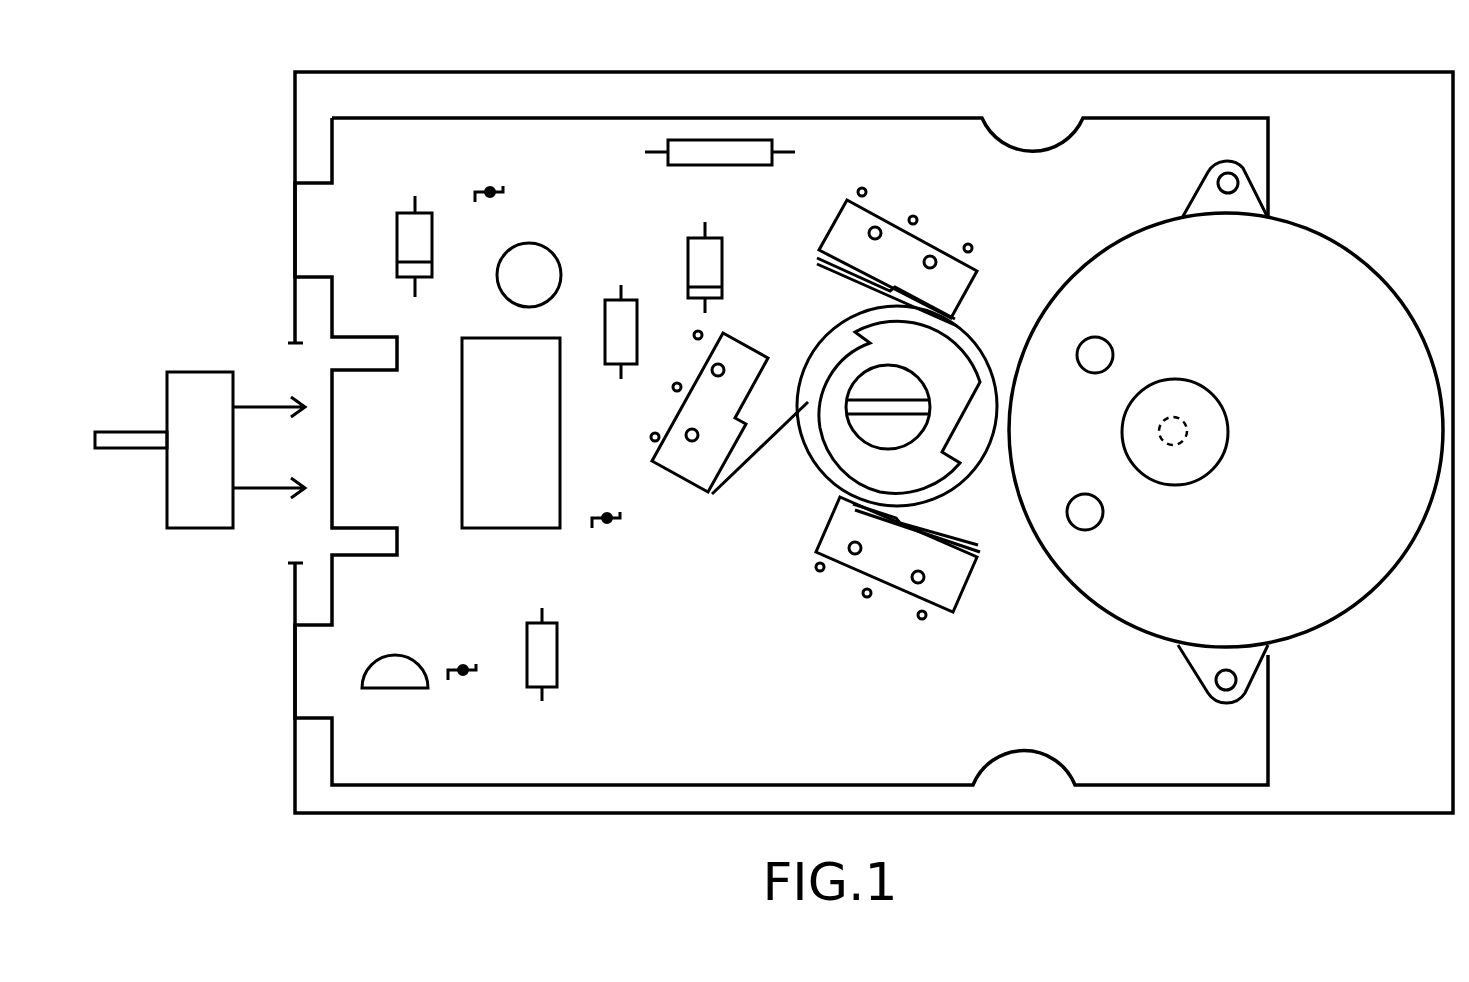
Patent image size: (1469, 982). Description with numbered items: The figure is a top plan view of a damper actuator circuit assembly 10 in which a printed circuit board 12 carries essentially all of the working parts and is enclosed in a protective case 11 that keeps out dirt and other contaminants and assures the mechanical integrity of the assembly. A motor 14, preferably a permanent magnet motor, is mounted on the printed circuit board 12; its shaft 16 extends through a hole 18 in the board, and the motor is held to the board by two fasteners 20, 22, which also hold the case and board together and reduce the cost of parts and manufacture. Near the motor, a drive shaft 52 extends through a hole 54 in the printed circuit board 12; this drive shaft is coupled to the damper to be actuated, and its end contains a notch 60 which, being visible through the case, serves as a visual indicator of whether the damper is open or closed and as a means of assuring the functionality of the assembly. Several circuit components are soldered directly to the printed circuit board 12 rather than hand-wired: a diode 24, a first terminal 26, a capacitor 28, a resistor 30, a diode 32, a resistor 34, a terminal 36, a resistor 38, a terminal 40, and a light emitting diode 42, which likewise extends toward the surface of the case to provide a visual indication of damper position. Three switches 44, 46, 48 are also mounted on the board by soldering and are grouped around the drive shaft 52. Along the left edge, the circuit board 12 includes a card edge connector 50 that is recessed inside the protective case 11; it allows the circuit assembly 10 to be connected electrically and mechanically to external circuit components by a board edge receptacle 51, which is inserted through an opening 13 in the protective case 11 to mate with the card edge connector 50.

The circuit assembly 10 is at (430, 106).
The protective case 11 is at (820, 72).
The printed circuit board 12 is at (540, 118).
The opening 13 is at (293, 369).
The motor 14 is at (1295, 226).
The shaft 16 is at (1183, 418).
The hole 18 is at (1205, 475).
The fastener 20 is at (1243, 172).
The fastener 22 is at (1238, 679).
The diode 24 is at (397, 249).
The first terminal 26 is at (488, 189).
The capacitor 28 is at (561, 256).
The resistor 30 is at (638, 333).
The diode 32 is at (722, 268).
The resistor 34 is at (710, 167).
The terminal 36 is at (606, 526).
The resistor 38 is at (557, 656).
The terminal 40 is at (462, 666).
The light emitting diode 42 is at (395, 655).
The switch 44 is at (878, 211).
The switch 46 is at (701, 501).
The switch 48 is at (850, 573).
The card edge connector 50 is at (318, 447).
The board edge receptacle 51 is at (205, 378).
The drive shaft 52 is at (973, 360).
The hole 54 is at (943, 498).
The notch 60 is at (900, 397).